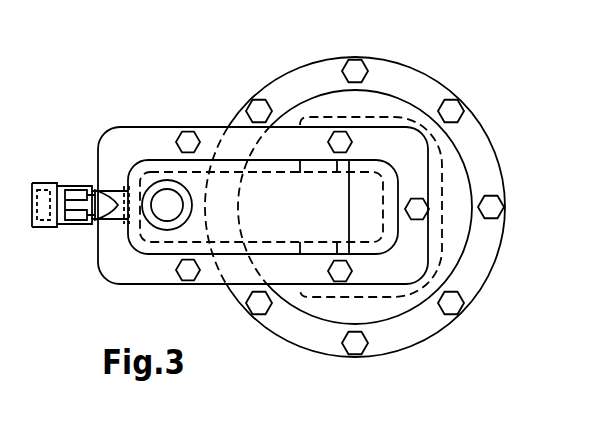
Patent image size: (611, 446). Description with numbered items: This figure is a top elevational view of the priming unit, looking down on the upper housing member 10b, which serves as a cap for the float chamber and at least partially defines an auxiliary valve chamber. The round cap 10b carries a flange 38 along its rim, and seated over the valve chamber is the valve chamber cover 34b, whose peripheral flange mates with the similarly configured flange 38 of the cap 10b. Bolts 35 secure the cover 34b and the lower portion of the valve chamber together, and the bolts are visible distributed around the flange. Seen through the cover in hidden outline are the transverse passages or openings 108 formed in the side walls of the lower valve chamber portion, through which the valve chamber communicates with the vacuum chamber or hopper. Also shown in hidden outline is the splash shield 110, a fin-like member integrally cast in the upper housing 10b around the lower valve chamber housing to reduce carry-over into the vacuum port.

The valve chamber cover 34b is at (134, 150).
The bolts 35 is at (455, 110).
The flange 38 is at (478, 158).
The upper housing member 10b is at (453, 243).
The transverse passages 108 is at (318, 250).
The splash shield 110 is at (384, 298).